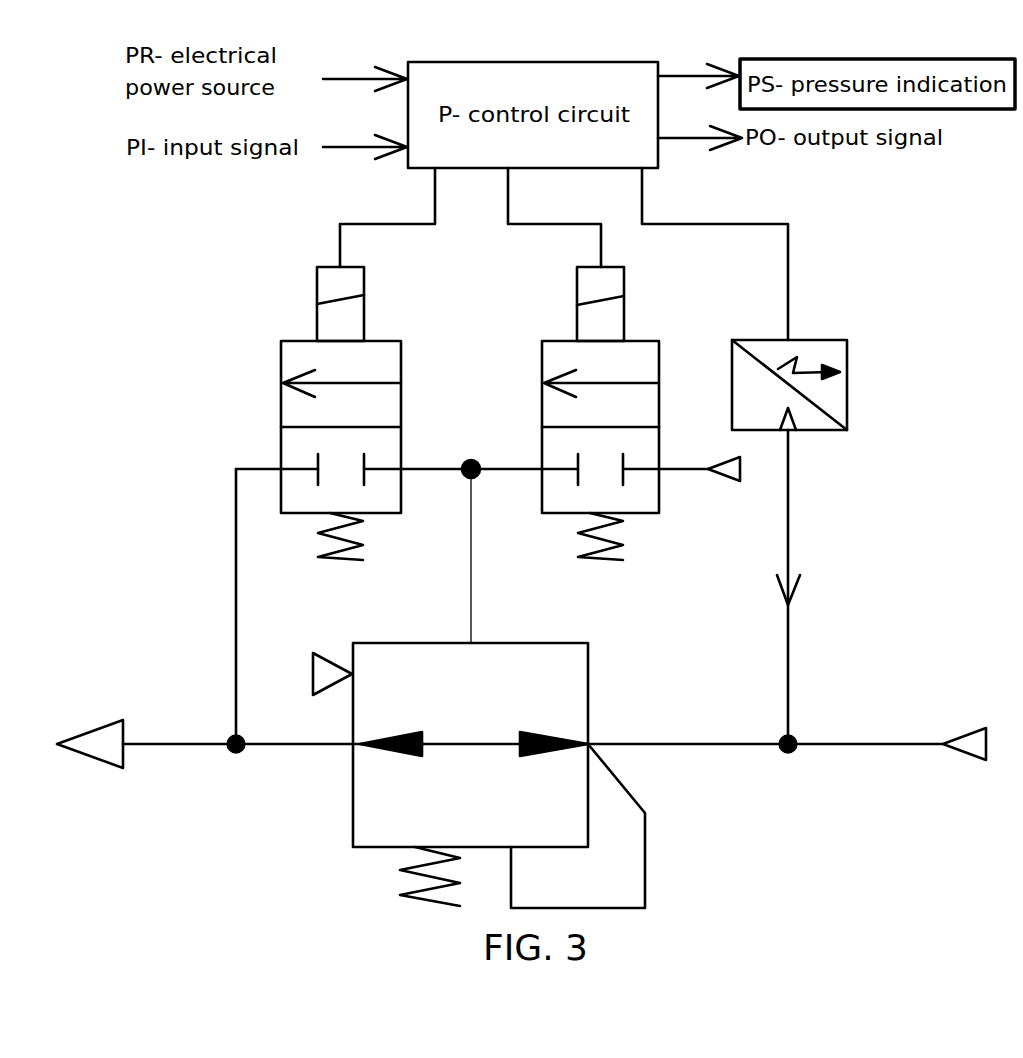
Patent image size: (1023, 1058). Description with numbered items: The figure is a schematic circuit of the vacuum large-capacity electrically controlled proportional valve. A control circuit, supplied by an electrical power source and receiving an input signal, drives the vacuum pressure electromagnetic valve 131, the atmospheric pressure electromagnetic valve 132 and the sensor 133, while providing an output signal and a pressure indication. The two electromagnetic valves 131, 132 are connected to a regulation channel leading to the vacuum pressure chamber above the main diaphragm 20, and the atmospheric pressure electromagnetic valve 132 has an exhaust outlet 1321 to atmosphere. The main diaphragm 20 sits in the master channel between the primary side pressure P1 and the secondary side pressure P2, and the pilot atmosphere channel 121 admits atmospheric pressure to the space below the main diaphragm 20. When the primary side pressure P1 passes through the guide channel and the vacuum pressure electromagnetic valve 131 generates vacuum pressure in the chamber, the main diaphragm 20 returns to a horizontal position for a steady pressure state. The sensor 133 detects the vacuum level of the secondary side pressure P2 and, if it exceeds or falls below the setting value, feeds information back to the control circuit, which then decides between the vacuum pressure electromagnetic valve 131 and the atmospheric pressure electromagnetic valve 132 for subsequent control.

The main diaphragm 20 is at (533, 643).
The pilot atmosphere channel 121 is at (332, 662).
The vacuum pressure electromagnetic valve 131 is at (282, 352).
The atmospheric pressure electromagnetic valve 132 is at (542, 350).
The exhaust port of second solenoid valve 1321 is at (717, 480).
The sensor 133 is at (847, 385).
The primary side pressure P1 is at (236, 755).
The secondary side pressure P2 is at (788, 753).